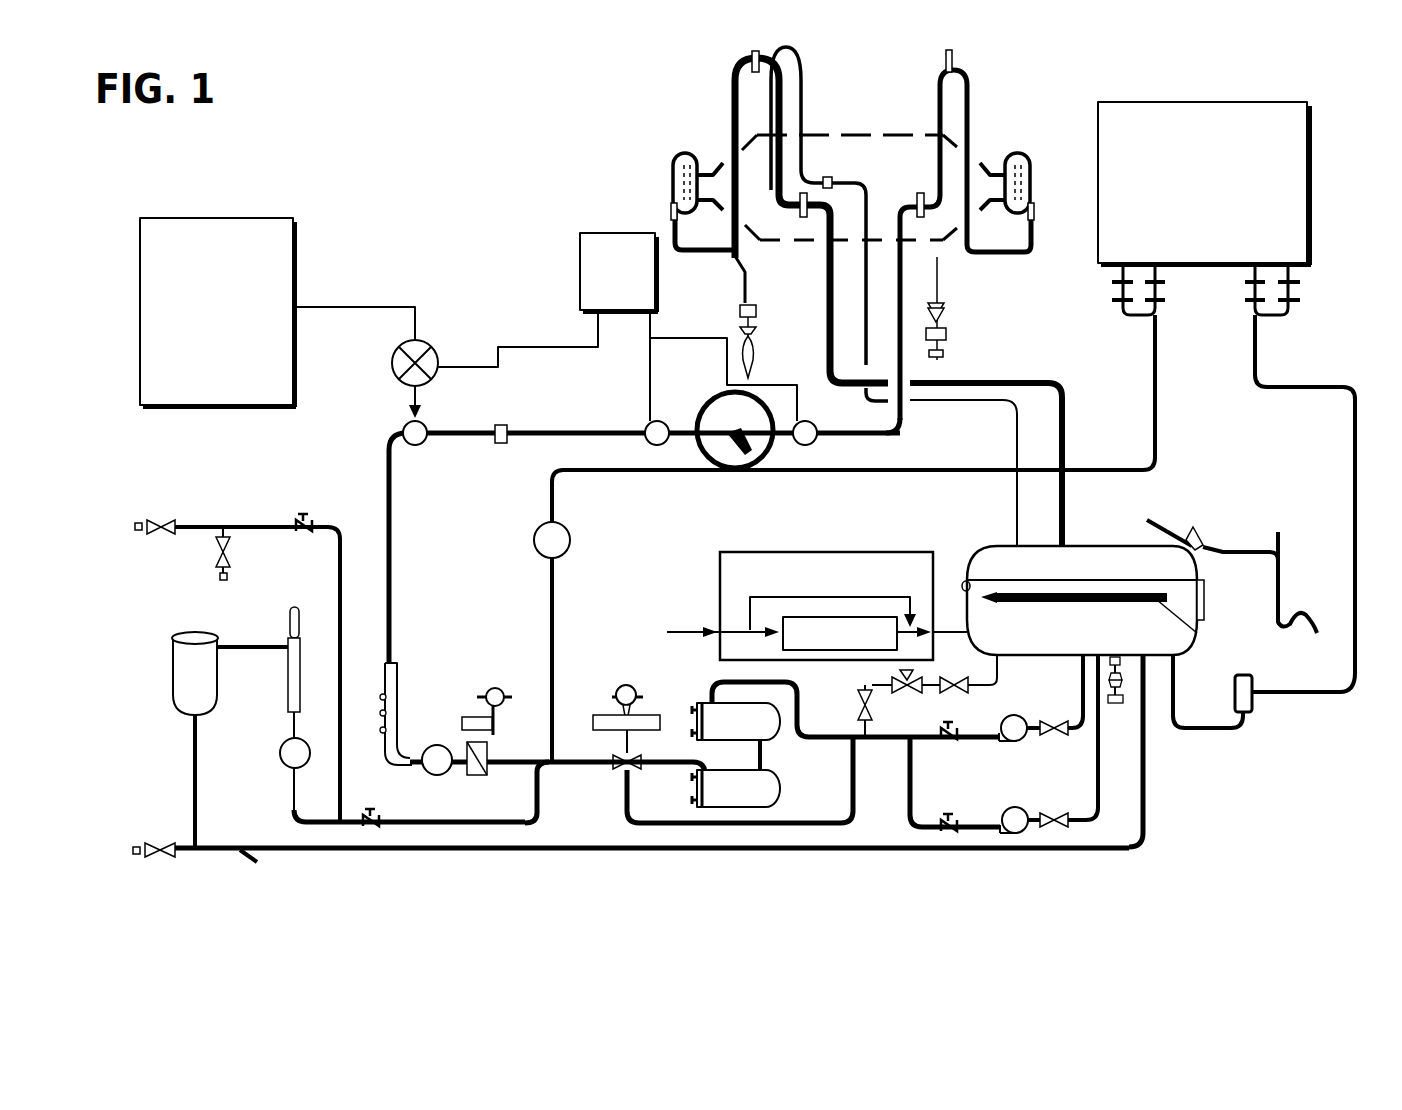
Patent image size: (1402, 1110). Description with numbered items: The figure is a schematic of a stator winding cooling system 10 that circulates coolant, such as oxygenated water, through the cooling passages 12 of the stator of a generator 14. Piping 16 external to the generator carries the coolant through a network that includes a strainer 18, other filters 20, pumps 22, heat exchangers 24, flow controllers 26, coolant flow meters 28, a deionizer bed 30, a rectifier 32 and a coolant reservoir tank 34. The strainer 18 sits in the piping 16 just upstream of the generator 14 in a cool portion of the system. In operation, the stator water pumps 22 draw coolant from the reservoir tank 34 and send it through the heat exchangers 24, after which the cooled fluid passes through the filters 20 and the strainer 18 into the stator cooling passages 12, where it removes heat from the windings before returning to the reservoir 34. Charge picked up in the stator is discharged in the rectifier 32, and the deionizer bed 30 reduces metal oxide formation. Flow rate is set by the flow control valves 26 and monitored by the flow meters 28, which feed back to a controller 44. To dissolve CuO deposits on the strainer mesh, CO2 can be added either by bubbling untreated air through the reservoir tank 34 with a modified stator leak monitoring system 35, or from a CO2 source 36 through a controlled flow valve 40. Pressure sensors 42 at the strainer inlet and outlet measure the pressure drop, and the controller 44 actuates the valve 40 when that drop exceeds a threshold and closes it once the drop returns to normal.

The stator winding cooling system 10 is at (486, 276).
The cooling passages 12 is at (780, 157).
The generator 14 is at (893, 177).
The piping 16 is at (602, 392).
The strainer 18 is at (714, 393).
The filters 20 is at (562, 553).
The pumps 22 is at (1018, 742).
The heat exchangers 24 is at (775, 737).
The flow controllers 26 is at (486, 700).
The coolant flow meters 28 is at (288, 623).
The deionizer bed 30 is at (173, 700).
The rectifier 32 is at (1215, 220).
The coolant reservoir tank 34 is at (1093, 550).
The stator leak monitoring system 35 is at (866, 591).
The source of CO2 36 is at (230, 275).
The controlled flow valve 40 is at (392, 360).
The pressure sensors 42 is at (658, 420).
The controller 44 is at (628, 279).